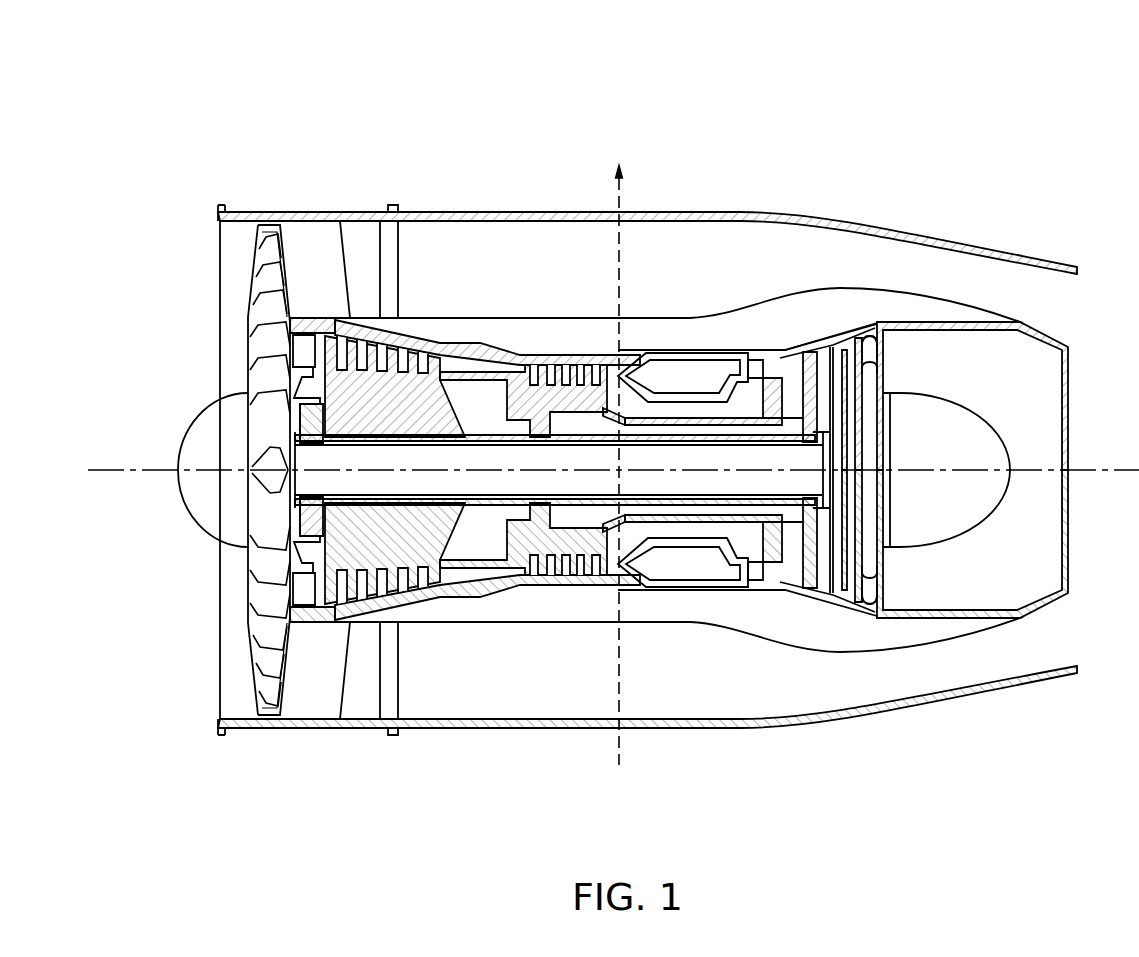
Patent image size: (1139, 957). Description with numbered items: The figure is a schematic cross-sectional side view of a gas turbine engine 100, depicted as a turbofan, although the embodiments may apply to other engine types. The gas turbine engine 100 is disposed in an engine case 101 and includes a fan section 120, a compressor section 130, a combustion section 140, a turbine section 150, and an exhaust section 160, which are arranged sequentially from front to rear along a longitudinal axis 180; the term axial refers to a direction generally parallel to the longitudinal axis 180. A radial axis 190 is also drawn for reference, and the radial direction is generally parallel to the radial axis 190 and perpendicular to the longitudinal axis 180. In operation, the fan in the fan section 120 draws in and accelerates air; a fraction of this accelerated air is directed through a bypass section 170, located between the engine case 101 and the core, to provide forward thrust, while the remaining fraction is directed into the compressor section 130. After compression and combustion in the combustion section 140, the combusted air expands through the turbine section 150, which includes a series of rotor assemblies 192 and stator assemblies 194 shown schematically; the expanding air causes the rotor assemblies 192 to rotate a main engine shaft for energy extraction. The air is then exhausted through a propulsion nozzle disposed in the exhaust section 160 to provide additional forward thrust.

The gas turbine engine 100 is at (454, 110).
The engine case 101 is at (454, 211).
The fan section 120 is at (175, 763).
The compressor section 130 is at (562, 763).
The combustion section 140 is at (727, 763).
The turbine section 150 is at (890, 763).
The exhaust section 160 is at (890, 763).
The bypass section 170 is at (532, 240).
The longitudinal axis 180 is at (105, 468).
The radial axis 190 is at (620, 257).
The rotor assemblies 192 is at (864, 373).
The stator assemblies 194 is at (842, 342).